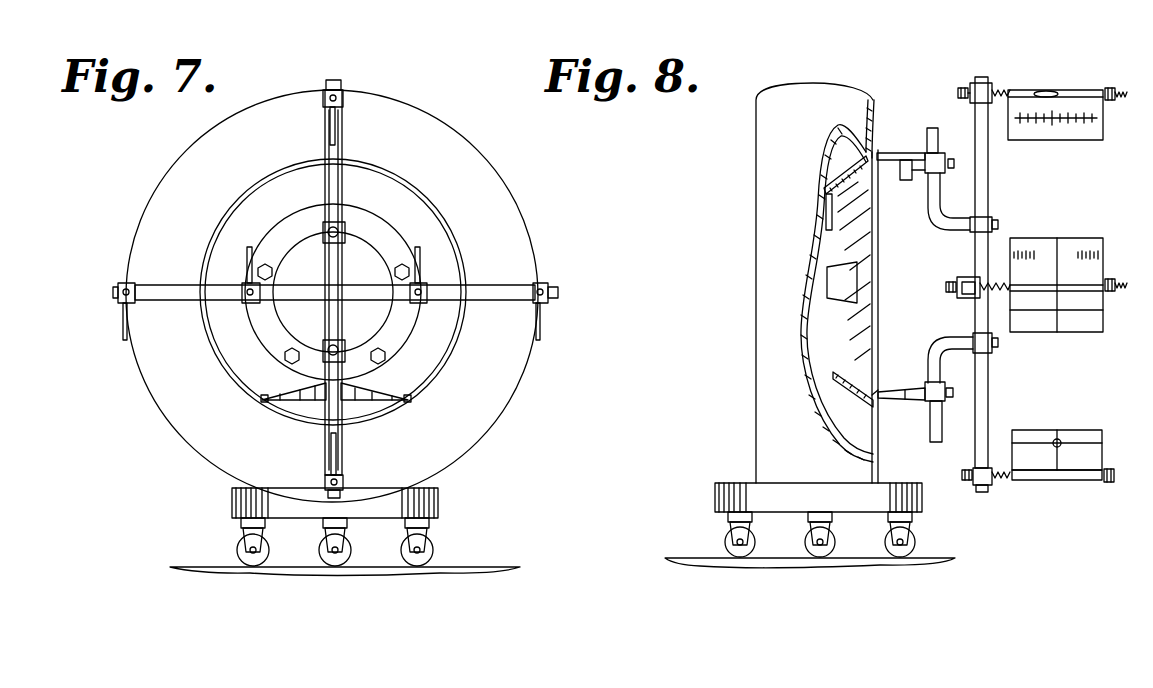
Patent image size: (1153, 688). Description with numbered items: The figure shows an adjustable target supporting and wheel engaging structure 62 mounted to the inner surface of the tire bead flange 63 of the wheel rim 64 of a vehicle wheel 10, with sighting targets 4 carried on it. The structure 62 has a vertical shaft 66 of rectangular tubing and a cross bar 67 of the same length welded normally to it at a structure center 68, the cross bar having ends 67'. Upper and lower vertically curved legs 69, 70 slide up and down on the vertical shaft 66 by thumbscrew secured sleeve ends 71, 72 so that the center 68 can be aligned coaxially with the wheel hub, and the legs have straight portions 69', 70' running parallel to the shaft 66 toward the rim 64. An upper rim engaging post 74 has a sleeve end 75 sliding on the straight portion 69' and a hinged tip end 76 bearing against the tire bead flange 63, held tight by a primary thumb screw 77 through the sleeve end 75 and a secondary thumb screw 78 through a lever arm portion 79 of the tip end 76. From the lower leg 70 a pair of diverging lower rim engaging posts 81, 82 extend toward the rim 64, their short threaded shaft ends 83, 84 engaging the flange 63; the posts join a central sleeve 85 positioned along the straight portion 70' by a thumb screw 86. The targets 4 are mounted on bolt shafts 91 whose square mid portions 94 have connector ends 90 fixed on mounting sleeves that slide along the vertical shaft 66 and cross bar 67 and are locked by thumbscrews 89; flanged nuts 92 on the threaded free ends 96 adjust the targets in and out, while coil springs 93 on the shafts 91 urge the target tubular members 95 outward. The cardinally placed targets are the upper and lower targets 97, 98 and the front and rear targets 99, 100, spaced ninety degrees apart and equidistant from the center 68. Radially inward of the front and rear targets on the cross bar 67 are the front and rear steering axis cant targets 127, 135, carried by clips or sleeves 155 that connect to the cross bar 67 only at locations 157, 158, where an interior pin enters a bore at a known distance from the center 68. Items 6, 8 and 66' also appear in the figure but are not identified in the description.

In FIG. 7, the targets 4 is at (535, 328).
In FIG. 8, the targets 4 is at (1085, 130).
In FIG. 7, the base 6 is at (417, 505).
In FIG. 8, the base 6 is at (720, 497).
In FIG. 7, the floor 8 is at (187, 565).
In FIG. 8, the floor 8 is at (945, 557).
In FIG. 7, the wheel 10 is at (458, 136).
In FIG. 8, the wheel 10 is at (762, 128).
In FIG. 7, the target supporting and wheel engaging structure 62 is at (342, 160).
In FIG. 8, the target supporting and wheel engaging structure 62 is at (977, 110).
In FIG. 7, the tire bead flange 63 is at (463, 330).
In FIG. 8, the tire bead flange 63 is at (873, 235).
In FIG. 7, the wheel rim 64 is at (410, 208).
In FIG. 8, the wheel rim 64 is at (858, 312).
In FIG. 7, the vertical shaft 66 is at (302, 282).
In FIG. 8, the vertical shaft 66 is at (1007, 272).
In FIG. 7, the end clamp of vertical bar 66' is at (359, 275).
In FIG. 7, the cross bar 67 is at (335, 307).
In FIG. 8, the cross bar 67 is at (1014, 276).
In FIG. 7, the cross bar ends 67' is at (338, 271).
In FIG. 7, the structure center 68 is at (292, 322).
In FIG. 7, the upper vertically curved leg 69 is at (385, 160).
In FIG. 8, the upper vertically curved leg 69 is at (949, 201).
In FIG. 8, the upper leg straight portion 69' is at (918, 122).
In FIG. 7, the lower vertically curved leg 70 is at (371, 361).
In FIG. 8, the lower vertically curved leg 70 is at (939, 348).
In FIG. 8, the lower leg straight portion 70' is at (919, 453).
In FIG. 7, the upper leg sleeve end 71 is at (325, 233).
In FIG. 8, the upper leg sleeve end 71 is at (990, 222).
In FIG. 7, the lower leg sleeve end 72 is at (385, 349).
In FIG. 8, the lower leg sleeve end 72 is at (990, 348).
In FIG. 8, the upper rim engaging post 74 is at (905, 155).
In FIG. 7, the post sleeve end 75 is at (320, 177).
In FIG. 8, the post sleeve end 75 is at (937, 158).
In FIG. 8, the hinged tip end 76 is at (868, 148).
In FIG. 8, the primary thumb screw 77 is at (955, 162).
In FIG. 8, the secondary thumb screw 78 is at (905, 177).
In FIG. 8, the lever arm portion 79 is at (915, 177).
In FIG. 7, the lower rim engaging post 81 is at (296, 402).
In FIG. 8, the lower rim engaging post 81 is at (932, 410).
In FIG. 7, the lower rim engaging post 82 is at (368, 402).
In FIG. 8, the lower rim engaging post 82 is at (915, 392).
In FIG. 7, the threaded shaft end 83 is at (260, 402).
In FIG. 7, the threaded shaft end 84 is at (407, 400).
In FIG. 8, the threaded shaft end 84 is at (877, 393).
In FIG. 8, the central sleeve 85 is at (992, 90).
In FIG. 8, the thumb screw 86 is at (955, 396).
In FIG. 8, the thumbscrews 89 is at (960, 86).
In FIG. 8, the connector ends 90 is at (1000, 92).
In FIG. 8, the shafts 91 is at (1032, 93).
In FIG. 8, the flanged nuts 92 is at (1108, 283).
In FIG. 8, the coil springs 93 is at (993, 482).
In FIG. 8, the shaft mid portions 94 is at (1050, 88).
In FIG. 8, the target tubular members 95 is at (1090, 88).
In FIG. 8, the threaded free ends 96 is at (1123, 100).
In FIG. 7, the upper target 97 is at (330, 125).
In FIG. 8, the upper target 97 is at (1073, 88).
In FIG. 7, the lower target 98 is at (332, 453).
In FIG. 8, the lower target 98 is at (1093, 438).
In FIG. 7, the front target 99 is at (123, 320).
In FIG. 8, the front target 99 is at (1097, 318).
In FIG. 7, the rear target 100 is at (547, 308).
In FIG. 7, the front steering axis cant target 127 is at (247, 266).
In FIG. 7, the rear steering axis cant target 135 is at (440, 252).
In FIG. 7, the clips or sleeves 155 is at (240, 288).
In FIG. 7, the cross bar connection location 157 is at (450, 340).
In FIG. 7, the cross bar connection location 158 is at (212, 327).